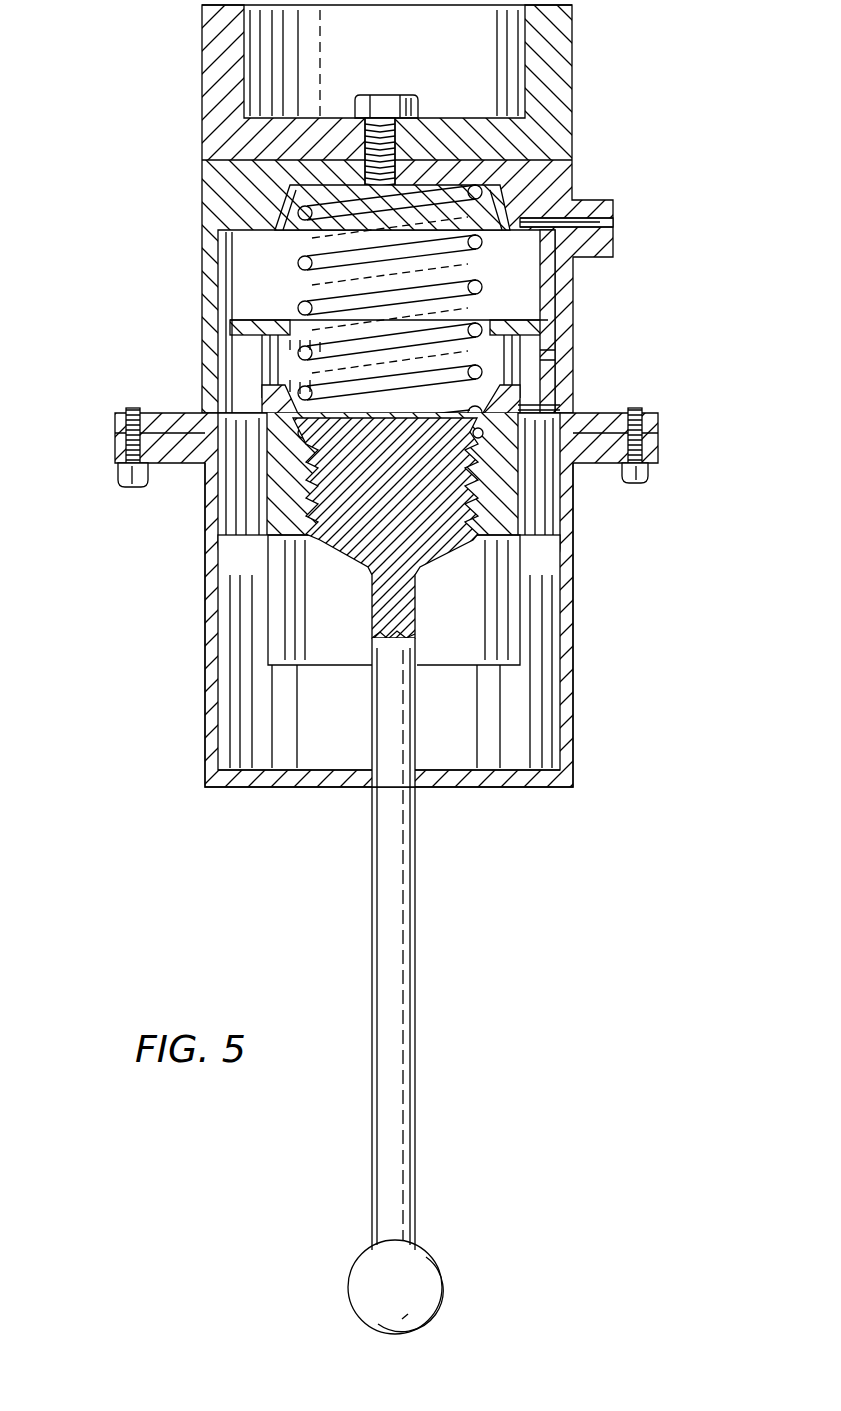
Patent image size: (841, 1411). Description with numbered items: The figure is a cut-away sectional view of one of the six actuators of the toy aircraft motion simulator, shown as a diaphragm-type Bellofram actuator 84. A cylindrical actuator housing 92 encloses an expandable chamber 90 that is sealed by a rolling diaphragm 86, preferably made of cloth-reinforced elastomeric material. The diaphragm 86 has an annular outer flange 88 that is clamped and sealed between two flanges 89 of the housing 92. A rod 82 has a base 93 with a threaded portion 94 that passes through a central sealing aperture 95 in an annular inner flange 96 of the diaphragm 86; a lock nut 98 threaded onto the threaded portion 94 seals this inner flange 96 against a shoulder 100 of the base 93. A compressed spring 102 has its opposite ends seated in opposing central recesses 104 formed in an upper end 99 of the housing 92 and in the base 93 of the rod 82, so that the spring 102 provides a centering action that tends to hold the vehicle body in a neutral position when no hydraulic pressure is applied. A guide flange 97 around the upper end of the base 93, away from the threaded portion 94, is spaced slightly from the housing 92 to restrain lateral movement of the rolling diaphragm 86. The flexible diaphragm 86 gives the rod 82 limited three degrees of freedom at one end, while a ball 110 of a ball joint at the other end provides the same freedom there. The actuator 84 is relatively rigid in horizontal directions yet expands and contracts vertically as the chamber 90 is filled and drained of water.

The rod 82 is at (416, 918).
The actuator 84 is at (614, 703).
The rolling diaphragm 86 is at (560, 562).
The annular outer flange 88 is at (578, 450).
The flanges 89 is at (118, 456).
The expandable chamber 90 is at (262, 300).
The cylindrical actuator housing 92 is at (572, 282).
The base 93 is at (468, 600).
The threaded portion 94 is at (407, 507).
The central sealing aperture 95 is at (540, 356).
The annular inner flange 96 is at (540, 408).
The guide flange 97 is at (560, 305).
The lock nut 98 is at (300, 545).
The upper end 99 is at (568, 198).
The shoulder 100 is at (278, 408).
The compressed spring 102 is at (300, 262).
The central recesses 104 is at (300, 186).
The ball 110 is at (420, 1276).